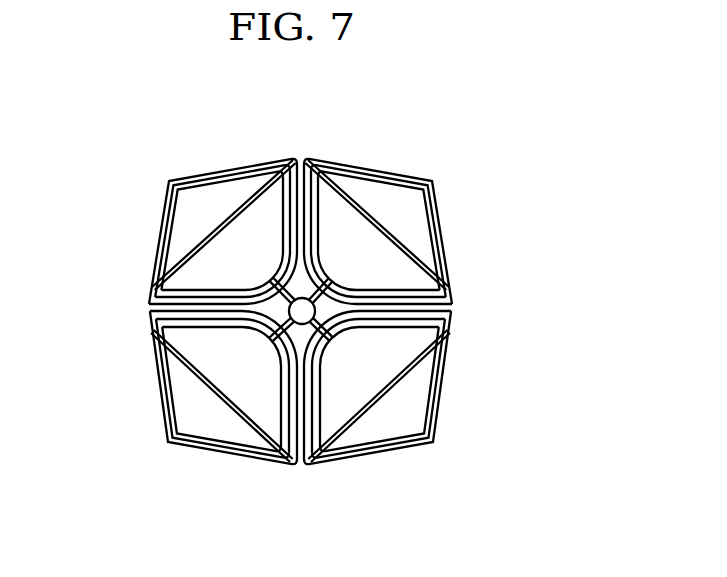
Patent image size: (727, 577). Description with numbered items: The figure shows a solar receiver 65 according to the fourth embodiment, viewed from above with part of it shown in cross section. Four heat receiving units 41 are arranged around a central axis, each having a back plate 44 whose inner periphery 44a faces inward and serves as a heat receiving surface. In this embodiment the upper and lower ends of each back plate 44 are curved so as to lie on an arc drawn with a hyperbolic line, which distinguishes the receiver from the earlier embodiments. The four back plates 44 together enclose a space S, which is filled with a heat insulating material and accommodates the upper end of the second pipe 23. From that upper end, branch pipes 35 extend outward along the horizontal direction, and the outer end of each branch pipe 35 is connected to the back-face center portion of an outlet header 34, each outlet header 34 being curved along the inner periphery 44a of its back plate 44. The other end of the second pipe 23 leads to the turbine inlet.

The solar receiver 65 is at (163, 175).
The fin plate 41 is at (160, 226).
The inner periphery 44a is at (290, 195).
The back plate 44 is at (302, 276).
The outlet header 34 is at (273, 279).
The branch pipe 35 is at (332, 318).
The second pipe 23 is at (276, 313).
The space S is at (305, 343).